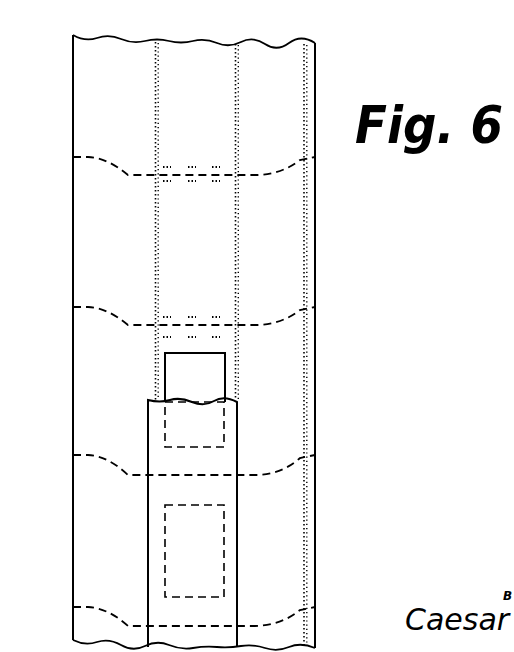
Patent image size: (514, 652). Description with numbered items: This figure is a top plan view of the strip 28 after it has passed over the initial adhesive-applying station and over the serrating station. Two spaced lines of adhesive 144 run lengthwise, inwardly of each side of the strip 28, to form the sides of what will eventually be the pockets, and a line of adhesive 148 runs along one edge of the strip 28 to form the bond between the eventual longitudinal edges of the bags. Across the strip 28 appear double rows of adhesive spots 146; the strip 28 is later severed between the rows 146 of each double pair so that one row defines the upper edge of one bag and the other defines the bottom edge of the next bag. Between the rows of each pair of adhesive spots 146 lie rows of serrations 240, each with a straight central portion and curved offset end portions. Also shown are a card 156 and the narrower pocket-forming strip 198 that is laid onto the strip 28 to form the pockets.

The strip 28 is at (228, 53).
The lines of adhesive 144 is at (160, 80).
The adhesive spots 146 is at (194, 167).
The line of adhesive 148 is at (305, 212).
The cards 156 is at (218, 372).
The pocket-forming strip 198 is at (237, 543).
The serrations 240 is at (178, 176).